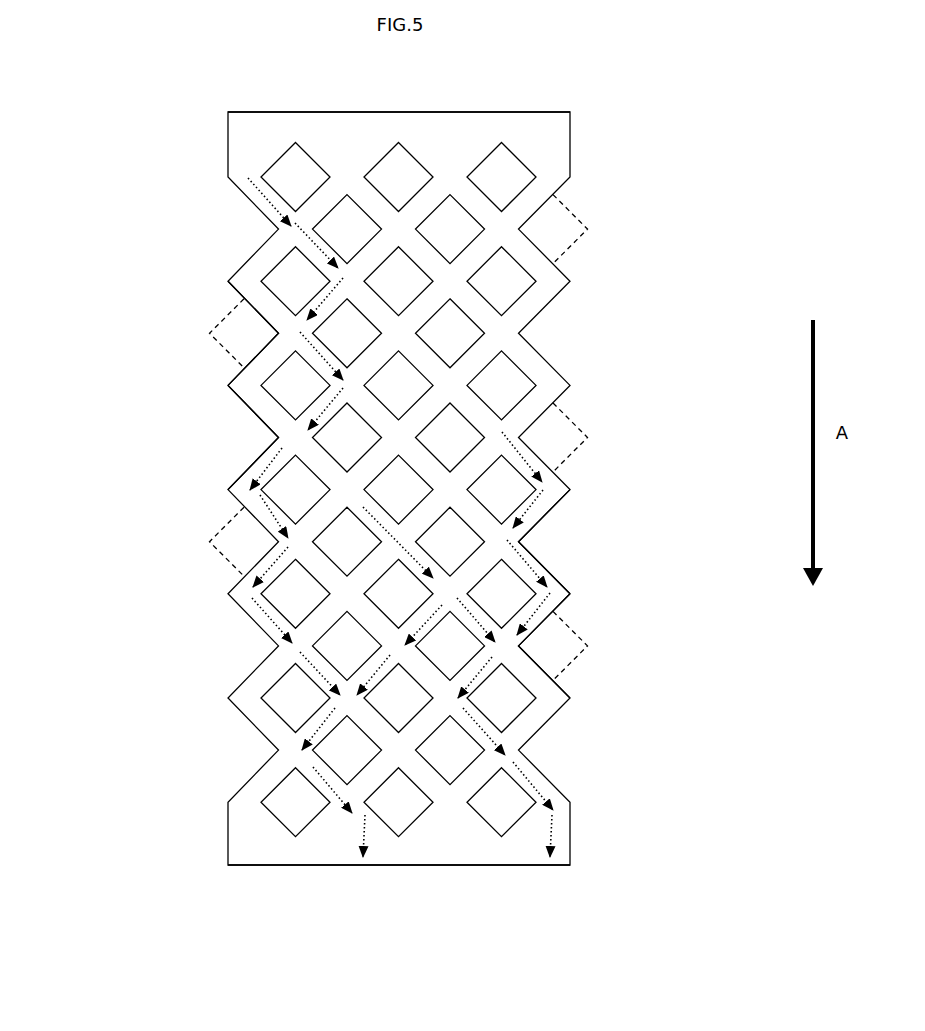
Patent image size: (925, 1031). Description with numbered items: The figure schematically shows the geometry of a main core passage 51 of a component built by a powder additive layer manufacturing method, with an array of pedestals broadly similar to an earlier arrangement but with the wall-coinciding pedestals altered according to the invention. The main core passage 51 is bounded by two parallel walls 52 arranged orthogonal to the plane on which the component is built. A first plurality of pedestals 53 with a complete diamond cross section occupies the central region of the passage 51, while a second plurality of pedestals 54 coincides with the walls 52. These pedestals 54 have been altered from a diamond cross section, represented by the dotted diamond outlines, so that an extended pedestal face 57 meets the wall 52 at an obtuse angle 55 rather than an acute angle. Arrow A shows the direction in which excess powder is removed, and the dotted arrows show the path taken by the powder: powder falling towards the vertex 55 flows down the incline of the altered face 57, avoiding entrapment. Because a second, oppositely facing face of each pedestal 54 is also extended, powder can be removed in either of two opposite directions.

The main core passage 51 is at (364, 784).
The parallel walls 52 is at (227, 827).
The first plurality of pedestals 53 is at (342, 650).
The second plurality of pedestals 54 is at (565, 655).
The obtuse angle 55 is at (237, 173).
The pedestal face 57 is at (256, 518).